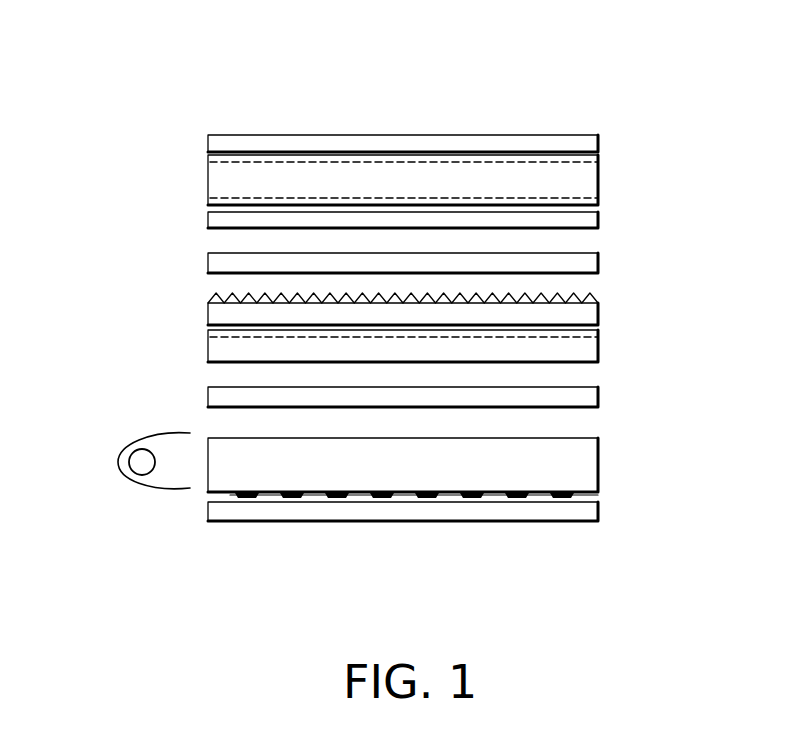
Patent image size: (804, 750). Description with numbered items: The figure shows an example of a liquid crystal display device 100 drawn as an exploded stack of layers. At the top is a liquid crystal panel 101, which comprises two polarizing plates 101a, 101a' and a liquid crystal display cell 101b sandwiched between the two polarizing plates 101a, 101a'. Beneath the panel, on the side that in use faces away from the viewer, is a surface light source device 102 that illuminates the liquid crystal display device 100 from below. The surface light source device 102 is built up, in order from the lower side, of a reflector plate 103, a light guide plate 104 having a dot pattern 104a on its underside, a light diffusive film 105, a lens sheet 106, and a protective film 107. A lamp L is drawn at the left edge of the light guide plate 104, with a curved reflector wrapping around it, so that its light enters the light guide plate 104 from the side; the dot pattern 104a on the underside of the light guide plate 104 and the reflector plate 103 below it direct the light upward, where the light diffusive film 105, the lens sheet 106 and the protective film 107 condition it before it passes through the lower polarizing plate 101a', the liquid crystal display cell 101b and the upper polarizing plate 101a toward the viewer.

The liquid crystal display device 100 is at (393, 106).
The liquid crystal panel 101 is at (607, 133).
The polarizing plate 101a is at (362, 117).
The liquid crystal display cell 101b is at (218, 182).
The polarizing plate 101a' is at (343, 195).
The surface light source device 102 is at (113, 252).
The reflector plate 103 is at (588, 510).
The light guide plate 104 is at (588, 465).
The dot pattern 104a is at (473, 495).
The light diffusive film 105 is at (600, 393).
The lens sheet 106 is at (607, 302).
The protective film 107 is at (600, 260).
The lamp L is at (162, 433).